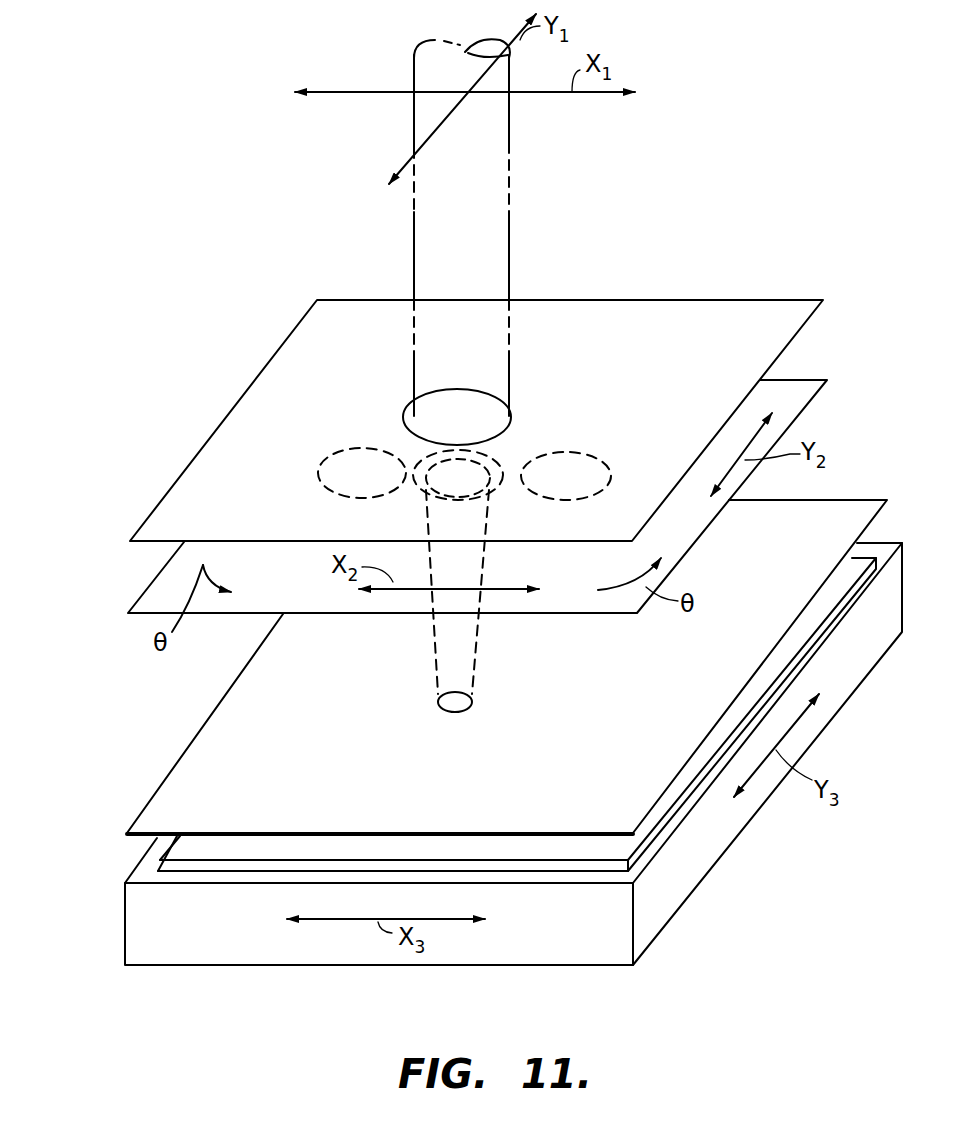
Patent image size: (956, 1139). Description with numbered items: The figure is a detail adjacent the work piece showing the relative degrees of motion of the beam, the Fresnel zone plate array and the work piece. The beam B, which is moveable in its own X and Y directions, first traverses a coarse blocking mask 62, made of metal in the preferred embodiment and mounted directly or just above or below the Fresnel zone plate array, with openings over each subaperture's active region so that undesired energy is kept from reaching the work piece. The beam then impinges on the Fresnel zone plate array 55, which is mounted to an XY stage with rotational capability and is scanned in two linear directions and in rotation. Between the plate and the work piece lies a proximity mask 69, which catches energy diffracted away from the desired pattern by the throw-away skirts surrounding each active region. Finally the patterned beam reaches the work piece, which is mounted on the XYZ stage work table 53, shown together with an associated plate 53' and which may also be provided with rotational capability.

The work table 53 is at (513, 788).
The stage plate 53' is at (460, 717).
The Fresnel zone plate array 55 is at (813, 379).
The coarse blocking mask 62 is at (727, 363).
The proximity mask 69 is at (614, 802).
The beam B is at (510, 232).